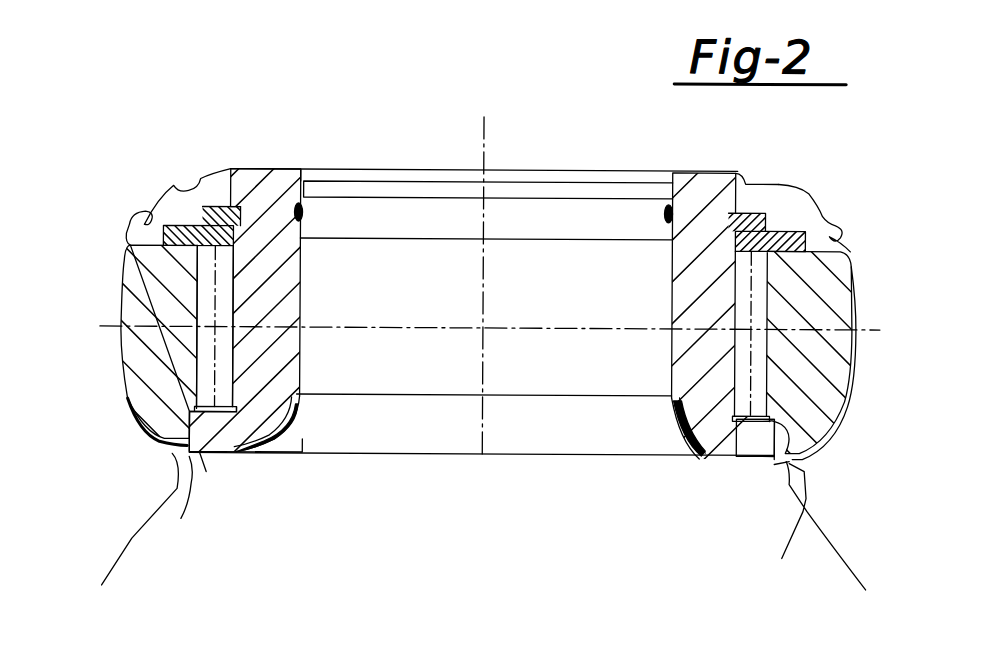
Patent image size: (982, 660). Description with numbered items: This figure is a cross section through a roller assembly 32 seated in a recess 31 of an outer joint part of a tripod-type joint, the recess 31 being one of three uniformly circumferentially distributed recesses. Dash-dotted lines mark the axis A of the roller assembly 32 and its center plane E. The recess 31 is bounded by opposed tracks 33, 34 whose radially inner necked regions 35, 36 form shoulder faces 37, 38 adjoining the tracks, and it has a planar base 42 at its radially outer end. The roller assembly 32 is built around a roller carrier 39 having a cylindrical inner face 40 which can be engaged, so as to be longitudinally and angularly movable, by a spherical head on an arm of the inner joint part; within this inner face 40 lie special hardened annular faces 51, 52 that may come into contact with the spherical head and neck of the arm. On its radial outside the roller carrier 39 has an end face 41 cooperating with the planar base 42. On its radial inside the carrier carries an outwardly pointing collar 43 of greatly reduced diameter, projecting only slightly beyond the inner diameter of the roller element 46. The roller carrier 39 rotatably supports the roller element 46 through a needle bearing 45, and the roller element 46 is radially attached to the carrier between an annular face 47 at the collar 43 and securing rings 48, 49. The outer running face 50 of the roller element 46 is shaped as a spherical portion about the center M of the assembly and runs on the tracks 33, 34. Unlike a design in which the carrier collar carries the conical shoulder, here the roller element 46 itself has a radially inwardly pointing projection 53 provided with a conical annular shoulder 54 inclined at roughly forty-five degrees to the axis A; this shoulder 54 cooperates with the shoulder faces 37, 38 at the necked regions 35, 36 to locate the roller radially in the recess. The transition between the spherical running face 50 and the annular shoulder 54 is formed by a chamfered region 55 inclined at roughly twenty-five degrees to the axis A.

The recess 31 is at (197, 180).
The roller assembly 32 is at (323, 226).
The track 33 is at (149, 216).
The track 34 is at (827, 223).
The necked region 35 is at (153, 483).
The necked region 36 is at (783, 557).
The shoulder face 37 is at (182, 520).
The shoulder face 38 is at (775, 463).
The roller carrier 39 is at (282, 210).
The cylindrical inner face 40 is at (300, 355).
The end face 41 is at (262, 170).
The planar base 42 is at (428, 180).
The collar 43 is at (210, 455).
The needle bearing 45 is at (738, 285).
The roller element 46 is at (813, 277).
The annular face 47 is at (750, 457).
The securing ring 48 is at (752, 183).
The securing ring 49 is at (780, 183).
The running face 50 is at (856, 310).
The annular face 51 is at (660, 225).
The annular face 52 is at (680, 445).
The radially inwardly pointing projection 53 is at (200, 453).
The conical annular shoulder 54 is at (140, 445).
The chamfered region 55 is at (130, 417).